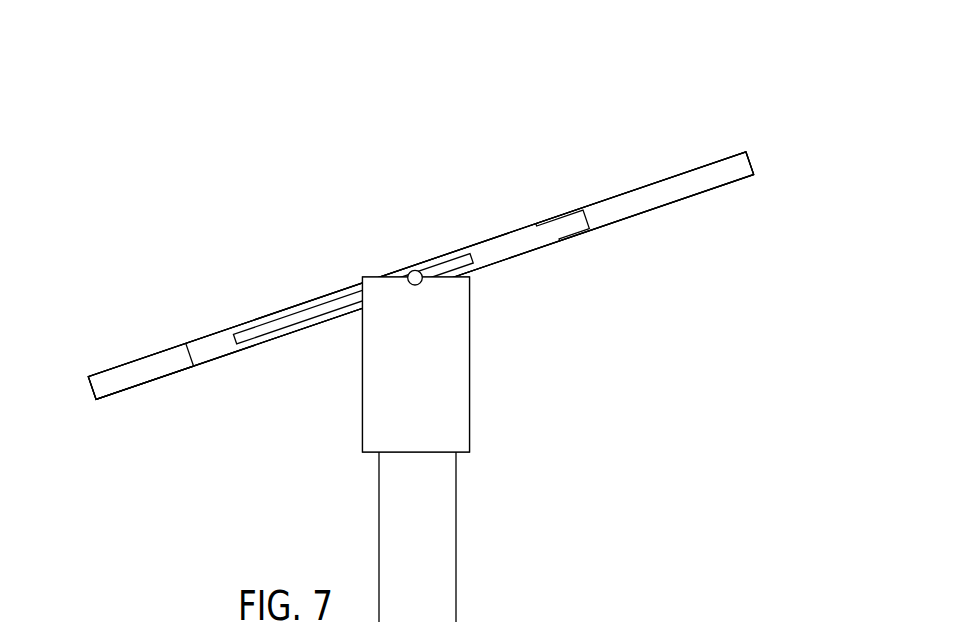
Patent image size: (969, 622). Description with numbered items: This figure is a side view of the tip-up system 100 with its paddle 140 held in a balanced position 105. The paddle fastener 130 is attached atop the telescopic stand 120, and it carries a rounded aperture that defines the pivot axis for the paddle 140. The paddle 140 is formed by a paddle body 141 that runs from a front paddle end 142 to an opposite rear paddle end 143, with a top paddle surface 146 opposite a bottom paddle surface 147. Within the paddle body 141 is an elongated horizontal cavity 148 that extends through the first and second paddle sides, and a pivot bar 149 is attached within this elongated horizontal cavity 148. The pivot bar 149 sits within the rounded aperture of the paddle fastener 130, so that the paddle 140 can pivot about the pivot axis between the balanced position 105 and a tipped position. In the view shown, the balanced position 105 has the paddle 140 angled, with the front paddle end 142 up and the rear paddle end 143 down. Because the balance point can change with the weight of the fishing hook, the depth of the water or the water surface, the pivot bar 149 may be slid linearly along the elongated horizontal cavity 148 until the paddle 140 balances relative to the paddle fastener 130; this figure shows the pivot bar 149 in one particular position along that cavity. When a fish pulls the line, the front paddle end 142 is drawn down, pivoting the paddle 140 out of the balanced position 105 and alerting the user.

The tip-up system 100 is at (585, 72).
The balanced position 105 is at (592, 125).
The telescopic stand 120 is at (437, 540).
The paddle fastener 130 is at (388, 403).
The paddle 140 is at (420, 148).
The paddle body 141 is at (605, 208).
The front paddle end 142 is at (730, 170).
The rear paddle end 143 is at (110, 379).
The top paddle surface 146 is at (218, 332).
The bottom paddle surface 147 is at (146, 383).
The elongated horizontal cavity 148 is at (273, 322).
The pivot bar 149 is at (425, 278).